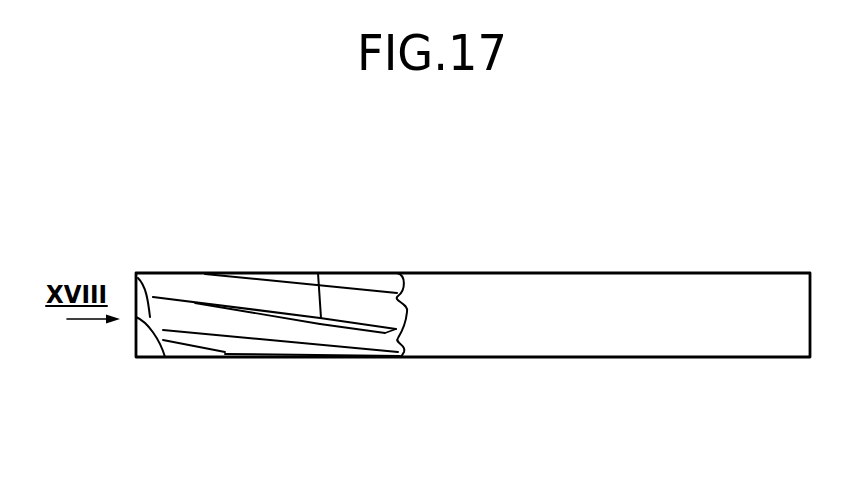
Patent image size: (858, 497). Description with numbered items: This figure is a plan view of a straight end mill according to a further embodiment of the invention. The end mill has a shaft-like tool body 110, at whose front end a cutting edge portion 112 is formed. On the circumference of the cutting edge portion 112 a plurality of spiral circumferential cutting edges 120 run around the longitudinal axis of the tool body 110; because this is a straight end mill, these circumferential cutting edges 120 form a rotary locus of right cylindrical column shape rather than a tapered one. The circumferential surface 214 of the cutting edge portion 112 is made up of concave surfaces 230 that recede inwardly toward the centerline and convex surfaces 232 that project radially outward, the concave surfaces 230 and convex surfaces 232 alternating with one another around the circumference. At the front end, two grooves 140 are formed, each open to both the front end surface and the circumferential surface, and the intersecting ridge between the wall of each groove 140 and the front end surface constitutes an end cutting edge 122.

The tool body 110 is at (620, 290).
The cutting edge portion 112 is at (373, 305).
The circumferential cutting edges 120 is at (317, 272).
The end cutting edges 122 is at (136, 339).
The grooves 140 is at (149, 348).
The concave surfaces 230 is at (378, 332).
The convex surfaces 232 is at (333, 335).
The circumferential surface 214 is at (437, 418).